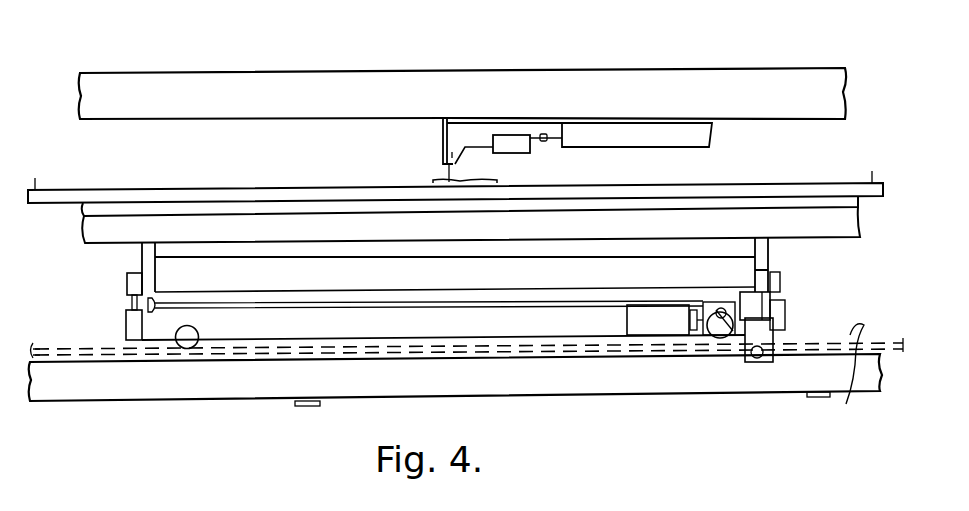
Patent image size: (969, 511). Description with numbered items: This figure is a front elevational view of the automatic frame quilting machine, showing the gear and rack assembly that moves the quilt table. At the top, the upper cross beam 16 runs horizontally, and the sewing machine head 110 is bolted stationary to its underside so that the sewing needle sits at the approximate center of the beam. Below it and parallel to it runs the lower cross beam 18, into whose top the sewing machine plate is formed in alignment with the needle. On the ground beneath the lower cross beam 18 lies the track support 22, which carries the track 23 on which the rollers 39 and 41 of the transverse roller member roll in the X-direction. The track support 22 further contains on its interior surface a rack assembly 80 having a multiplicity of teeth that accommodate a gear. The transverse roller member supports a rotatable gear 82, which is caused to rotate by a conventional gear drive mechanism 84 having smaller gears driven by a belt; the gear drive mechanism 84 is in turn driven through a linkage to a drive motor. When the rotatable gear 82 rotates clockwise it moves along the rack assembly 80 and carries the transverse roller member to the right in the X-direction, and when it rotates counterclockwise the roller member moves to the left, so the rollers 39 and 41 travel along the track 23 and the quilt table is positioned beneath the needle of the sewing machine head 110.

The upper cross beam 16 is at (750, 82).
The sewing machine head 110 is at (505, 127).
The lower cross beam 18 is at (730, 225).
The roller 39 is at (178, 336).
The roller 41 is at (717, 330).
The rotatable gear 82 is at (738, 318).
The gear drive mechanism 84 is at (760, 353).
The track 23 is at (820, 343).
The rack assembly 80 is at (847, 375).
The track support 22 is at (698, 387).